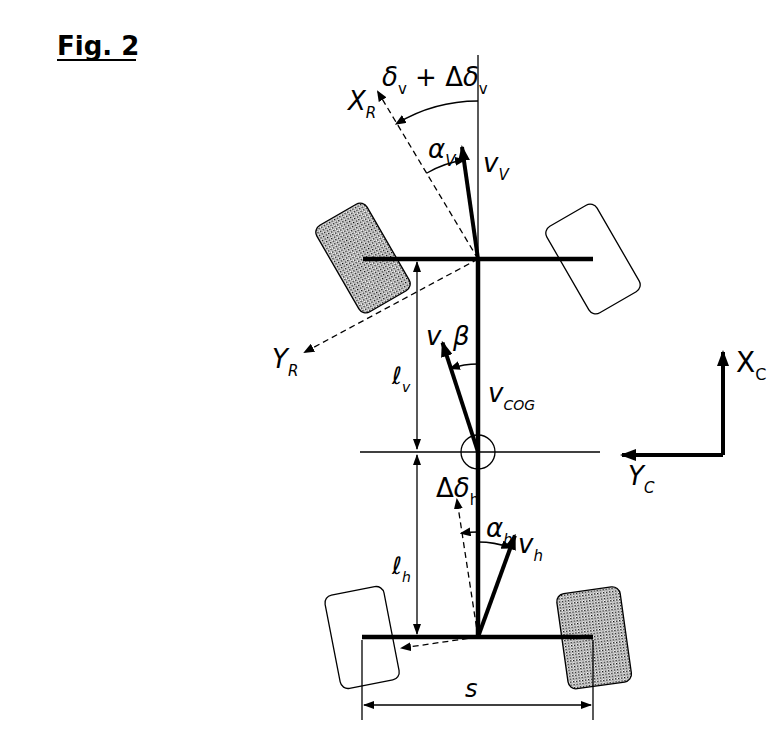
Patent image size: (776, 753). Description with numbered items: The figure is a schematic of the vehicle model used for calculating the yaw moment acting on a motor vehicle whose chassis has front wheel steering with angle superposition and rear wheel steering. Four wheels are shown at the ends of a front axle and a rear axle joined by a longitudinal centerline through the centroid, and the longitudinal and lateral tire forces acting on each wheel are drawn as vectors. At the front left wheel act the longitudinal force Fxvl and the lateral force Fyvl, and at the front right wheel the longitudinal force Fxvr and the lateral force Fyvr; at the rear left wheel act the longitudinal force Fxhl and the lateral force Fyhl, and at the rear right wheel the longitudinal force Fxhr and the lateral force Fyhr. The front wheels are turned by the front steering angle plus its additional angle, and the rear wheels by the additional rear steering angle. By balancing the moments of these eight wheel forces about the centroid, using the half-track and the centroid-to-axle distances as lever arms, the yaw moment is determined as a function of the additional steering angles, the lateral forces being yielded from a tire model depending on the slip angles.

The longitudinal force on the front left wheel Fxvl is at (363, 258).
The lateral force on the front left wheel Fyvl is at (363, 258).
The longitudinal force on the front right wheel Fxvr is at (593, 259).
The lateral force on the front right wheel Fyvr is at (593, 259).
The longitudinal force on the rear left wheel Fxhl is at (362, 637).
The lateral force on the rear left wheel Fyhl is at (362, 637).
The longitudinal force on the rear right wheel Fxhr is at (593, 637).
The lateral force on the rear right wheel Fyhr is at (593, 638).